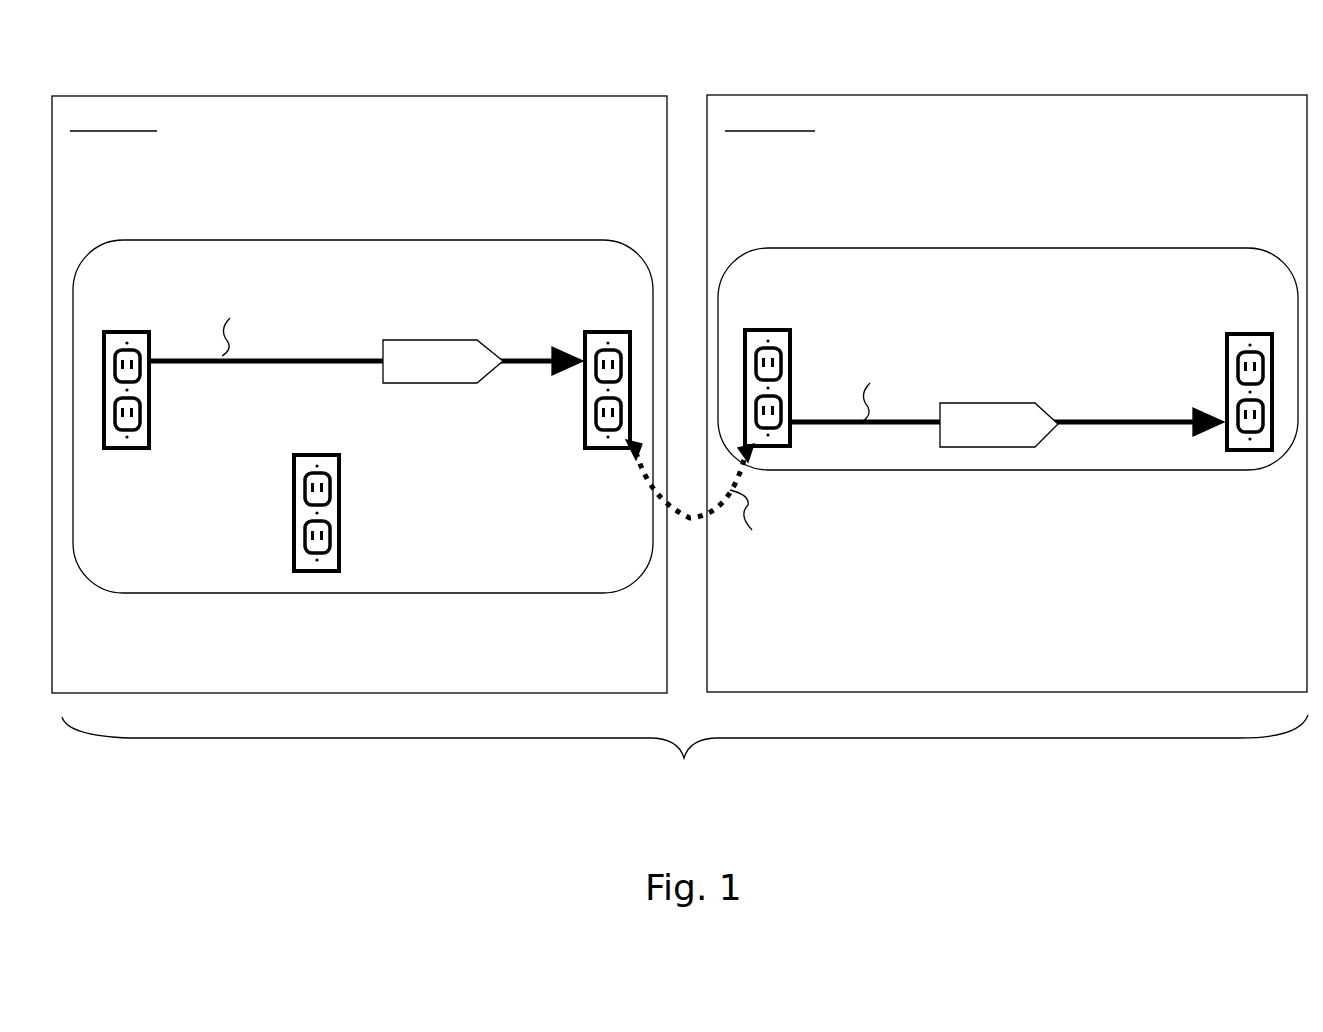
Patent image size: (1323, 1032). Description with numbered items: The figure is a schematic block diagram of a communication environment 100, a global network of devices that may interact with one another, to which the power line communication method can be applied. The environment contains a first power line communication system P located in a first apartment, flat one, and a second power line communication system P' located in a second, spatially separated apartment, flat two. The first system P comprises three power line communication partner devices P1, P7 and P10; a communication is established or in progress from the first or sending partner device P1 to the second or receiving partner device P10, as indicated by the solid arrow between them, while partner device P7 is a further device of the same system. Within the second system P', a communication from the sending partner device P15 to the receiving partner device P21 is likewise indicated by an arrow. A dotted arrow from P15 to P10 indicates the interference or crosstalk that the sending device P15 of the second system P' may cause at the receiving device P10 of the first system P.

The communication environment 100 is at (680, 451).
The first power line communication system P is at (363, 449).
The second power line communication system P' is at (1008, 391).
The first or sending power line communication partner device P1 is at (125, 330).
The power line communication partner device P7 is at (310, 453).
The second or receiving power line communication partner device P10 is at (610, 330).
The sending power line communication partner device P15 is at (763, 328).
The receiving power line communication partner device P21 is at (1248, 332).